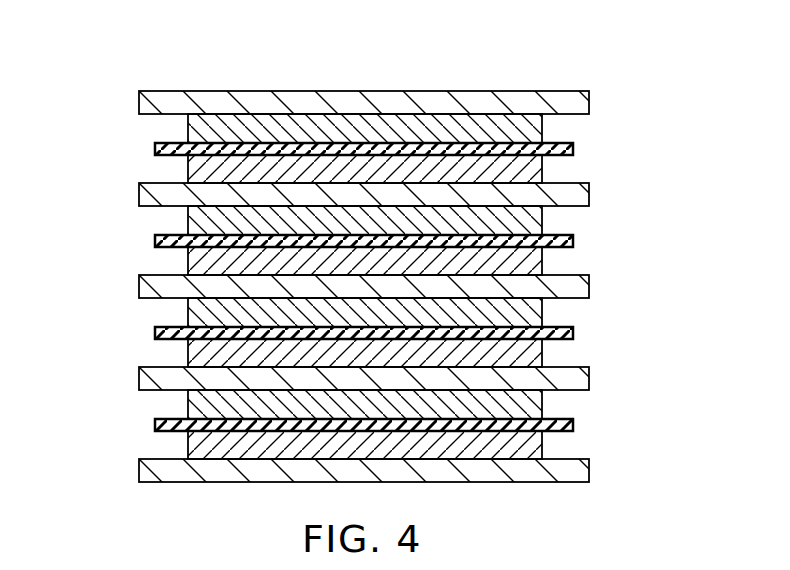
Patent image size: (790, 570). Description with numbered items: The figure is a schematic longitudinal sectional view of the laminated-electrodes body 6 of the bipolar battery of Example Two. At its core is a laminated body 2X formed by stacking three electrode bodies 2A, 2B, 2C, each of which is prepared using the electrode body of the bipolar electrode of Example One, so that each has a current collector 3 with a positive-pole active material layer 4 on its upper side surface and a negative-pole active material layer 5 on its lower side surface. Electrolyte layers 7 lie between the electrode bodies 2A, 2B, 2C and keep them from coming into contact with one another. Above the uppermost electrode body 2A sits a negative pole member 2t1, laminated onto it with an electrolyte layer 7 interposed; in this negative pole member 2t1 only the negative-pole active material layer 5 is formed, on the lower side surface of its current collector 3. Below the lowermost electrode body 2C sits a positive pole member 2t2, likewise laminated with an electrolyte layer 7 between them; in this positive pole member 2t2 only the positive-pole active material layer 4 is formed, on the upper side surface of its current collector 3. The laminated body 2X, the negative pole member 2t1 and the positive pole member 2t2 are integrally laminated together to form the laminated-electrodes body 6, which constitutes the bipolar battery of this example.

The current collector 3 is at (590, 100).
The positive-pole active material layer 4 is at (543, 168).
The negative-pole active material layer 5 is at (543, 127).
The laminated-electrodes body 6 is at (512, 57).
The electrolyte layer 7 is at (575, 148).
The electrode body 2A is at (130, 157).
The electrode body 2B is at (130, 250).
The electrode body 2C is at (130, 342).
The laminated body 2X is at (70, 158).
The negative pole member 2t1 is at (130, 92).
The positive pole member 2t2 is at (130, 433).